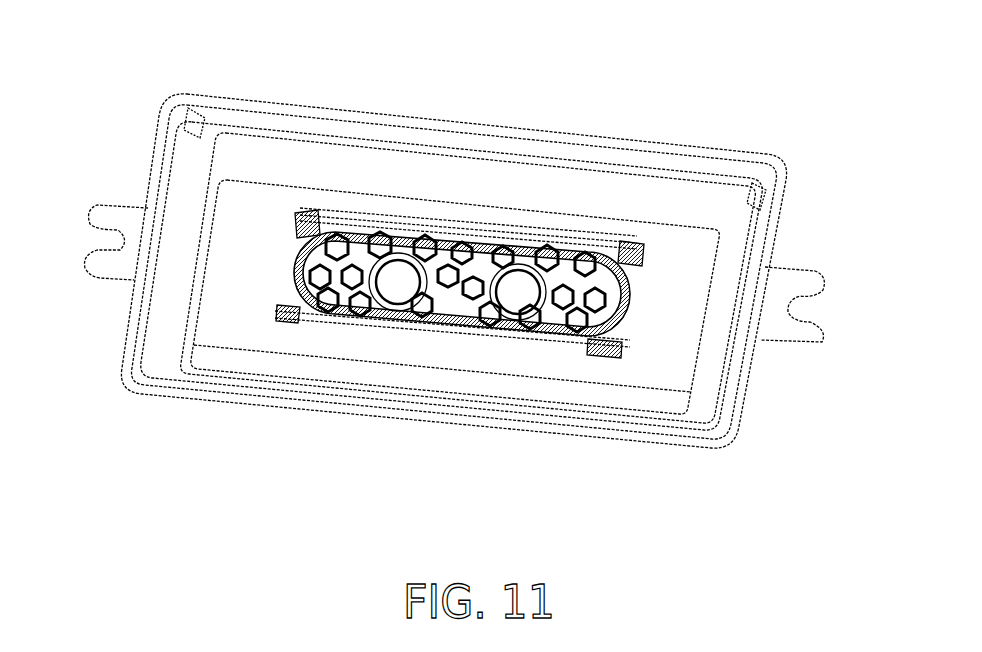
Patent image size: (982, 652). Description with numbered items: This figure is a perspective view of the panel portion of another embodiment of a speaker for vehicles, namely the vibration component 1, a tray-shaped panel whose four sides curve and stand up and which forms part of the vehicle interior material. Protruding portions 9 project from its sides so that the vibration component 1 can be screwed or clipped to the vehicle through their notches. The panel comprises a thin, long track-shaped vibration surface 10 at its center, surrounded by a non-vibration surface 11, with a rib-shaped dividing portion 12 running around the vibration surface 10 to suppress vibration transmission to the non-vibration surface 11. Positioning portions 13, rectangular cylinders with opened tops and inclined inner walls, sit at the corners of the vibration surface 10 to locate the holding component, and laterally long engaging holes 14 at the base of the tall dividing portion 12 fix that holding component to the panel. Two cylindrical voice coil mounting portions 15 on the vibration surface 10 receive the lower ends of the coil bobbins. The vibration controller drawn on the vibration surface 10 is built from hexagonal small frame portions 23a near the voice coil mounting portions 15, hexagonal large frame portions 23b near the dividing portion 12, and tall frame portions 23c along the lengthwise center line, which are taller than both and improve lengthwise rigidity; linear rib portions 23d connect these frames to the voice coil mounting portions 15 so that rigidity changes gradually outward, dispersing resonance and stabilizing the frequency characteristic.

The vibration component 1 is at (175, 117).
The protruding portion 9 is at (95, 226).
The vibration surface 10 is at (627, 327).
The non-vibration surface 11 is at (282, 188).
The dividing portion 12 is at (473, 224).
The positioning portion 13 is at (641, 243).
The engaging hole 14 is at (530, 228).
The voice coil mounting portion 15 is at (348, 230).
The small frame portion 23a is at (378, 232).
The large frame portion 23b is at (440, 232).
The tall frame portion 23c is at (325, 316).
The linear rib portion 23d is at (318, 213).